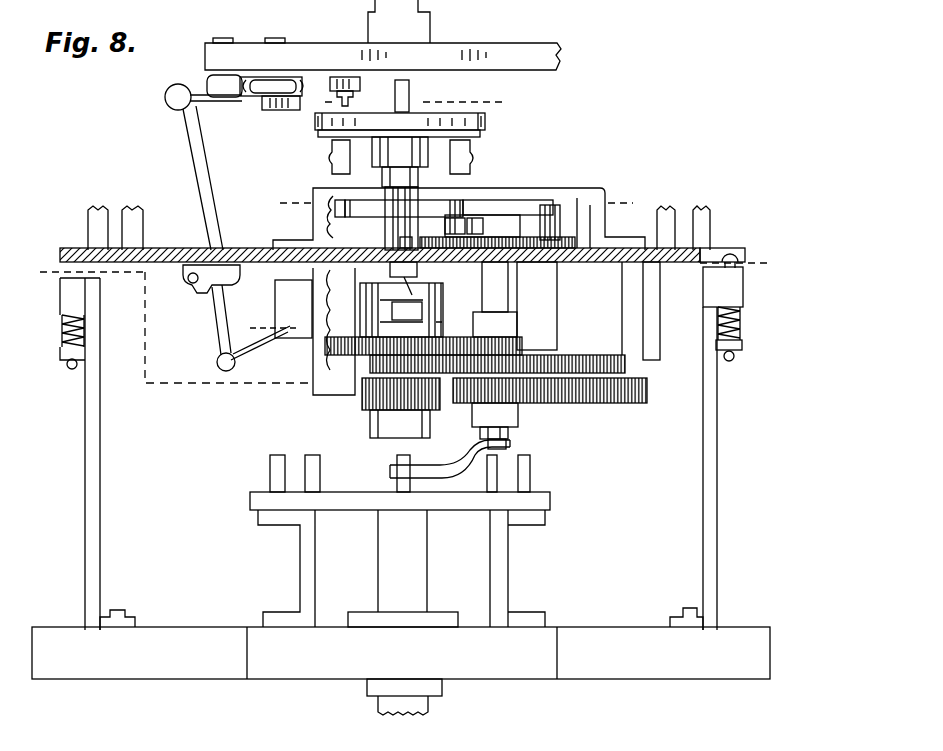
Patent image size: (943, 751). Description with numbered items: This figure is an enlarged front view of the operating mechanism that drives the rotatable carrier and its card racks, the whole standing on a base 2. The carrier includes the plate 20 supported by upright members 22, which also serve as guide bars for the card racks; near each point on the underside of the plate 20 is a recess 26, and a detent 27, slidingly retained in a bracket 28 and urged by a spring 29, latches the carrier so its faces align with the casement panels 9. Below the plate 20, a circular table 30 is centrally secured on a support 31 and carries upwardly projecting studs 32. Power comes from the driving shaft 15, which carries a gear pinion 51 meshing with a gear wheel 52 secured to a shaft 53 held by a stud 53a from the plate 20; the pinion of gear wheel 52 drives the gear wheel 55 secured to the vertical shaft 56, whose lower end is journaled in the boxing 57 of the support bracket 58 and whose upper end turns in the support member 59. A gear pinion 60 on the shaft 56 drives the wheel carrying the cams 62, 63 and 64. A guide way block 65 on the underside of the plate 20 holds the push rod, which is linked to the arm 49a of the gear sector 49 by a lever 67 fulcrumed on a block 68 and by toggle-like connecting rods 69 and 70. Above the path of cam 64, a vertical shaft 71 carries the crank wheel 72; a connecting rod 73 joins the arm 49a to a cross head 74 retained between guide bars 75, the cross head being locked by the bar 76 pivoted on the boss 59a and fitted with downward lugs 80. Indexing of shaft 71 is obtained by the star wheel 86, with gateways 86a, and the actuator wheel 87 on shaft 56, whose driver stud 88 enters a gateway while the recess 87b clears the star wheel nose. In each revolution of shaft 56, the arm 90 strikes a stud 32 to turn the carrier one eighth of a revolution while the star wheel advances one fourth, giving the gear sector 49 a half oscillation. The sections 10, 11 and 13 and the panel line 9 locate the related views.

The base 2 is at (180, 630).
The casement panels 9 is at (452, 204).
The section line 10 is at (400, 269).
The section line 11 is at (306, 327).
The section line 13 is at (413, 103).
The driving shaft 15 is at (380, 550).
The carrier plate 20 is at (680, 248).
The upright members 22 is at (710, 230).
The recess 26 is at (738, 250).
The detent 27 is at (72, 370).
The bracket 28 is at (745, 305).
The spring 29 is at (745, 335).
The circular table 30 is at (474, 512).
The support 31 is at (510, 576).
The studs 32 is at (268, 488).
The gear sector 49 is at (505, 45).
The arm 49a is at (322, 44).
The gear pinion 51 is at (368, 408).
The gear wheel 52 is at (648, 388).
The shaft 53 is at (508, 446).
The stud 53a is at (560, 318).
The gear wheel 55 is at (625, 360).
The vertical shaft 56 is at (480, 286).
The boxing 57 is at (512, 412).
The support bracket 58 is at (313, 393).
The support member 59 is at (600, 185).
The boss 59a is at (419, 176).
The gear pinion 60 is at (525, 344).
The cam 62 is at (395, 325).
The cam 63 is at (411, 311).
The cam 64 is at (412, 292).
The guide way block 65 is at (296, 340).
The lever 67 is at (204, 196).
The block 68 is at (232, 288).
The connecting rod 69 is at (242, 356).
The connecting rod 70 is at (236, 100).
The vertical shaft 71 is at (386, 232).
The crank wheel 72 is at (488, 122).
The connecting rod 73 is at (290, 85).
The cross head 74 is at (358, 104).
The guide bars 75 is at (410, 110).
The bar 76 is at (322, 133).
The lugs 80 is at (332, 166).
The star wheel 86 is at (425, 205).
The gateways 86a is at (362, 217).
The actuator wheel 87 is at (548, 205).
The recess 87b is at (500, 222).
The driver stud 88 is at (480, 226).
The arm 90 is at (462, 452).